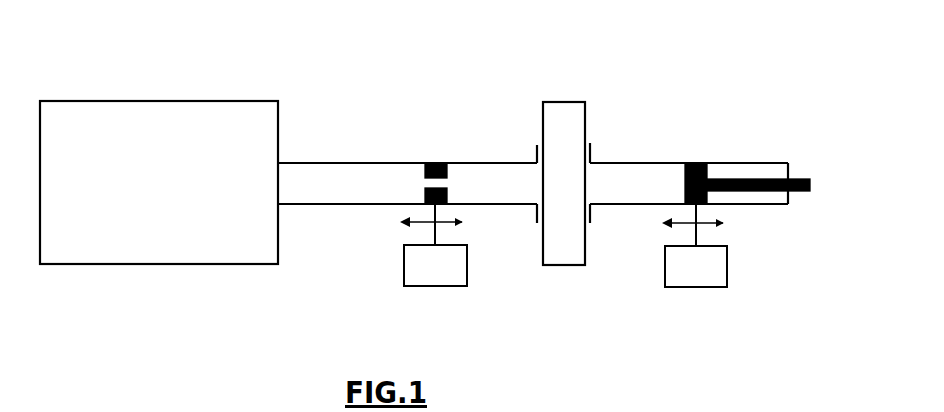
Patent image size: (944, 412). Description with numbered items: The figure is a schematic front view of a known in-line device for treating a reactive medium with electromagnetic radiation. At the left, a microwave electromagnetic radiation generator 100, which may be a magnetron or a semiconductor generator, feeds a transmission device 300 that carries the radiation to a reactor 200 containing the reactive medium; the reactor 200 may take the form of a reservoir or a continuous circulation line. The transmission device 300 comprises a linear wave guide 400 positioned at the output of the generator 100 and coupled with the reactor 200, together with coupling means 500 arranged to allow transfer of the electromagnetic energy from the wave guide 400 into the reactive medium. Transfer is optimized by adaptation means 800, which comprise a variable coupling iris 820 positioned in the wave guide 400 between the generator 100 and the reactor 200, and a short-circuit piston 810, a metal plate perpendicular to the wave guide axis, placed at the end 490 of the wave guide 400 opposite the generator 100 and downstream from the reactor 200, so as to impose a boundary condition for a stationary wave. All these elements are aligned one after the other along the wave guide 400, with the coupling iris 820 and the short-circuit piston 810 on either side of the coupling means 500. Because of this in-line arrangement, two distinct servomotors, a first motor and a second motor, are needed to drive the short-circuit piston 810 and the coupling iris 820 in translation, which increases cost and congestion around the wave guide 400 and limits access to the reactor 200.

The microwave electromagnetic radiation generator 100 is at (159, 182).
The transmission device 300 is at (358, 65).
The wave guide 400 is at (327, 163).
The variable coupling iris 820 is at (433, 163).
The reactor 200 is at (562, 102).
The coupling means 500 is at (606, 136).
The short-circuit piston 810 is at (693, 163).
The end of the wave guide 490 is at (788, 166).
The adaptation means 800 is at (653, 236).